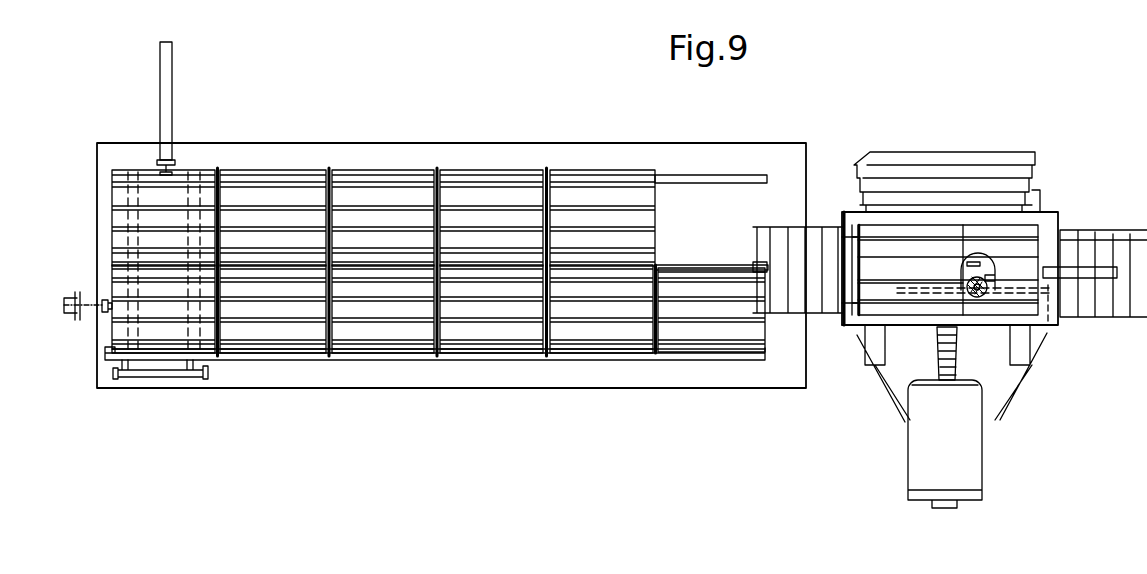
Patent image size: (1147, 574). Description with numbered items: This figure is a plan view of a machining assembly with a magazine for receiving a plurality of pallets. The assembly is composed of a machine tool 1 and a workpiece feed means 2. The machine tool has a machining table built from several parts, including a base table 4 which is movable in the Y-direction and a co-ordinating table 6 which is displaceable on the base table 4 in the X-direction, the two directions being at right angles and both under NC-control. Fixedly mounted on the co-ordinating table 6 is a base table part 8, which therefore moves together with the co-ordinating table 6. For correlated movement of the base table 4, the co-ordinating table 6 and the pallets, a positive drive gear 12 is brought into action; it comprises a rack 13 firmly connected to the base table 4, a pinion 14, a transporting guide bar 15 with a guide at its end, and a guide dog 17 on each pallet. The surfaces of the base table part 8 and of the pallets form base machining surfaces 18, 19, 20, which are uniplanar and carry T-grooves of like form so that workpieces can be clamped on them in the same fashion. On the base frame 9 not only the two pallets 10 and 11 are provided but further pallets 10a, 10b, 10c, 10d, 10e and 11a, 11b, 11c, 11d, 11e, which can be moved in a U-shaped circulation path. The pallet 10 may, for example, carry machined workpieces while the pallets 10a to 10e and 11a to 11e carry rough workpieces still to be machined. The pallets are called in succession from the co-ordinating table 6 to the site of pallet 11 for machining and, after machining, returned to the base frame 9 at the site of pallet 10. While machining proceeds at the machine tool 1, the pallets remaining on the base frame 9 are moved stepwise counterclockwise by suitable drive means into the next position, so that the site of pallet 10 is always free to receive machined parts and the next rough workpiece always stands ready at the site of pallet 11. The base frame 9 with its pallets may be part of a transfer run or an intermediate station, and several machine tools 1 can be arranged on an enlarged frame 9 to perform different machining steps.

The machine tool 1 is at (920, 455).
The workpiece feed means 2 is at (690, 356).
The base table 4 is at (1071, 298).
The co-ordinating table 6 is at (851, 324).
The base table part 8 is at (1065, 226).
The base frame 9 is at (634, 373).
The pallet 10 is at (872, 312).
The pallet 10a is at (590, 178).
The pallet 10b is at (466, 178).
The pallet 10c is at (360, 178).
The pallet 10d is at (258, 176).
The pallet 10e is at (186, 176).
The pallet 11 is at (716, 356).
The pallet 11a is at (608, 337).
The pallet 11b is at (502, 335).
The pallet 11c is at (384, 335).
The pallet 11d is at (260, 338).
The pallet 11e is at (178, 338).
The positive drive gear 12 is at (972, 302).
The rack 13 is at (1046, 318).
The pinion 14 is at (962, 284).
The transporting guide bar 15 is at (1000, 255).
The guide dog 17 is at (762, 312).
The base machining surface 18 is at (1030, 232).
The base machining surface 19 is at (912, 315).
The base machining surface 20 is at (739, 340).